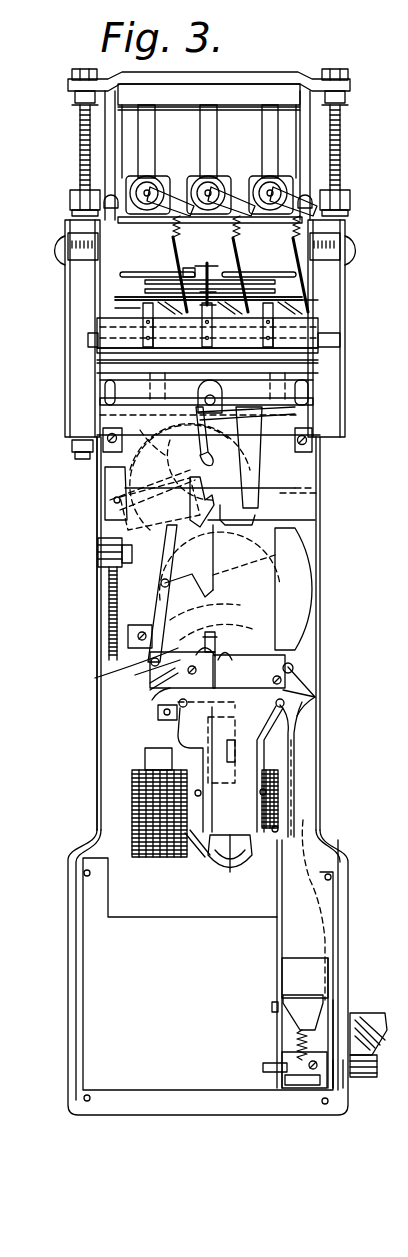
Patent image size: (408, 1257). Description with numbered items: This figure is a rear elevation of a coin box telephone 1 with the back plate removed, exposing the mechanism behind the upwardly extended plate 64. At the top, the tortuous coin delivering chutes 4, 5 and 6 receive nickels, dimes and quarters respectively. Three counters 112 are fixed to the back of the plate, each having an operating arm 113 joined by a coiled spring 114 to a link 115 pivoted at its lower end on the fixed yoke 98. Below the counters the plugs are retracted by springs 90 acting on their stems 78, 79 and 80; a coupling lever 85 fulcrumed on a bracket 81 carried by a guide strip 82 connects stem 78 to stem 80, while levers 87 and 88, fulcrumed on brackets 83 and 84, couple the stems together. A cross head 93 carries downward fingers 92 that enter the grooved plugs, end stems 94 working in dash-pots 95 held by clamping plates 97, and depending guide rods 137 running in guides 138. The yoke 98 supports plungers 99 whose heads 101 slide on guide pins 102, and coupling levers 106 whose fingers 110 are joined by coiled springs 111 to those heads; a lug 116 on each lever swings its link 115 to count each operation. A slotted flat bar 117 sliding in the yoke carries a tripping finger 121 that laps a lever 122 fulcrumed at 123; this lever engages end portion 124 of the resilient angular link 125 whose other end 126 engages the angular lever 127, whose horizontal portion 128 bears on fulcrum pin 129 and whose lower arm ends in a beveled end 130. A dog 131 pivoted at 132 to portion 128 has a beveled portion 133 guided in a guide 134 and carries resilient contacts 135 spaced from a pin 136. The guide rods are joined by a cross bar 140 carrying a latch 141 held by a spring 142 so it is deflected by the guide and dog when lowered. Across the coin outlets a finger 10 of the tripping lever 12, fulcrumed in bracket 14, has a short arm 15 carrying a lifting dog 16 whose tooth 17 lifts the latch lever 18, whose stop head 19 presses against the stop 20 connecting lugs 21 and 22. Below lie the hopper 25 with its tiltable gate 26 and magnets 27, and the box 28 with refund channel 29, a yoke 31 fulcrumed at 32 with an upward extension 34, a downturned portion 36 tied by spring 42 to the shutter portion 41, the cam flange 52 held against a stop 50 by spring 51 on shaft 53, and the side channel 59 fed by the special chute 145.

The telephone coin box 1 is at (97, 812).
The coin delivering chute 4 is at (100, 415).
The coin delivering chute 5 is at (152, 439).
The coin delivering chute 6 is at (320, 493).
The finger 10 is at (266, 658).
The tripping lever 12 is at (202, 686).
The bracket 14 is at (294, 670).
The short arm 15 is at (158, 716).
The lifting dog 16 is at (145, 703).
The tooth 17 is at (150, 681).
The latch lever 18 is at (205, 612).
The stop head 19 is at (215, 658).
The guide or stop 20 is at (217, 622).
The stop lug 21 is at (150, 654).
The stop lug 22 is at (218, 641).
The coin receiving hopper 25 is at (252, 731).
The tiltable valve or gate 26 is at (233, 857).
The remote controlled magnet 27 is at (280, 783).
The box 28 is at (286, 931).
The channel 29 is at (330, 918).
The yoke 31 is at (300, 1016).
The fulcrum 32 is at (272, 1006).
The upward extension of angular plate 34 is at (293, 970).
The downturned portion 36 is at (298, 1032).
The downwardly extending portion 41 is at (294, 1088).
The spring 42 is at (292, 1042).
The stop 50 is at (340, 1022).
The spring 51 is at (336, 1083).
The arcuate flange 52 is at (334, 1028).
The shaft 53 is at (263, 1068).
The channel 59 is at (336, 842).
The plate 64 is at (292, 263).
The stem 78 is at (145, 292).
The stem 79 is at (214, 270).
The stem 80 is at (278, 288).
The bracket 81 is at (245, 280).
The guide strip 82 is at (145, 283).
The bracket 83 is at (168, 268).
The bracket 84 is at (290, 243).
The coupling lever 85 is at (143, 298).
The lever 87 is at (167, 274).
The lever 88 is at (258, 272).
The spring 90 is at (133, 285).
The finger 92 is at (205, 125).
The cross head 93 is at (263, 95).
The stem 94 is at (79, 142).
The dash-pot 95 is at (75, 383).
The clamping plate 97 is at (66, 226).
The fixed yoke 98 is at (322, 331).
The plunger 99 is at (143, 322).
The head 101 is at (157, 327).
The guide pin 102 is at (147, 338).
The coupling lever 106 is at (322, 316).
The finger 110 is at (262, 330).
The coiled spring 111 is at (128, 310).
The counter 112 is at (162, 183).
The operating arm 113 is at (173, 200).
The coiled spring 114 is at (234, 233).
The link 115 is at (186, 270).
The lug 116 is at (320, 300).
The flat bar 117 is at (322, 350).
The tripping finger 121 is at (282, 327).
The lever 122 is at (252, 455).
The fulcrum 123 is at (246, 404).
The end portion of link 124 is at (228, 530).
The resilient angular link 125 is at (218, 562).
The end portion of link 126 is at (178, 576).
The angular lever 127 is at (155, 600).
The upper portion of lever 128 is at (165, 493).
The fulcrum pin 129 is at (113, 500).
The beveled end 130 is at (145, 672).
The dog 131 is at (177, 459).
The pivot 132 is at (168, 470).
The beveled portion 133 is at (140, 554).
The guide 134 is at (211, 502).
The resilient contacts 135 is at (99, 541).
The pin 136 is at (108, 508).
The guide rod 137 is at (112, 117).
The guide 138 is at (108, 196).
The cross bar 140 is at (178, 436).
The latch 141 is at (199, 396).
The spring 142 is at (320, 416).
The special chute 145 is at (297, 718).